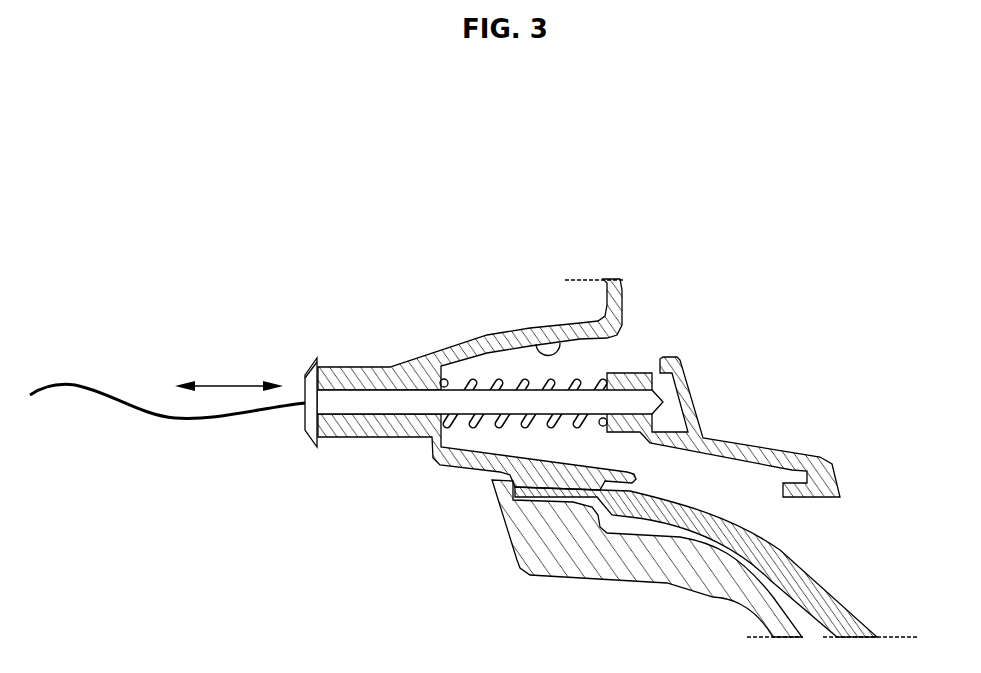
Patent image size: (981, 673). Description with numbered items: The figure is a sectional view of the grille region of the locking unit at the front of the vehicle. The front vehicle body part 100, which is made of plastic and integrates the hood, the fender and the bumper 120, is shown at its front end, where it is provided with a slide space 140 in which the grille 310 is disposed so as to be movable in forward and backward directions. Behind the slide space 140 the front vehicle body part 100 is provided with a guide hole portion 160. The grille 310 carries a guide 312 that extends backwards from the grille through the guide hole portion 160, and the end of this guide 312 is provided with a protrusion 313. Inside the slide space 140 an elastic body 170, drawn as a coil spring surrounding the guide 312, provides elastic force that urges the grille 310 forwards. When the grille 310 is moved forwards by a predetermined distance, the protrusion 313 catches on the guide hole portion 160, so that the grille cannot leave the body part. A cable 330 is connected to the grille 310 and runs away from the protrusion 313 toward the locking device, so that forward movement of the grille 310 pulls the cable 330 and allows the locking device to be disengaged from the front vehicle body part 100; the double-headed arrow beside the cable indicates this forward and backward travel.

The front vehicle body part 100 is at (653, 568).
The bumper 120 is at (590, 558).
The slide space 140 is at (537, 343).
The guide hole portion 160 is at (372, 427).
The elastic body 170 is at (495, 378).
The grille 310 is at (640, 371).
The guide 312 is at (397, 400).
The protrusion 313 is at (311, 357).
The cable 330 is at (90, 380).